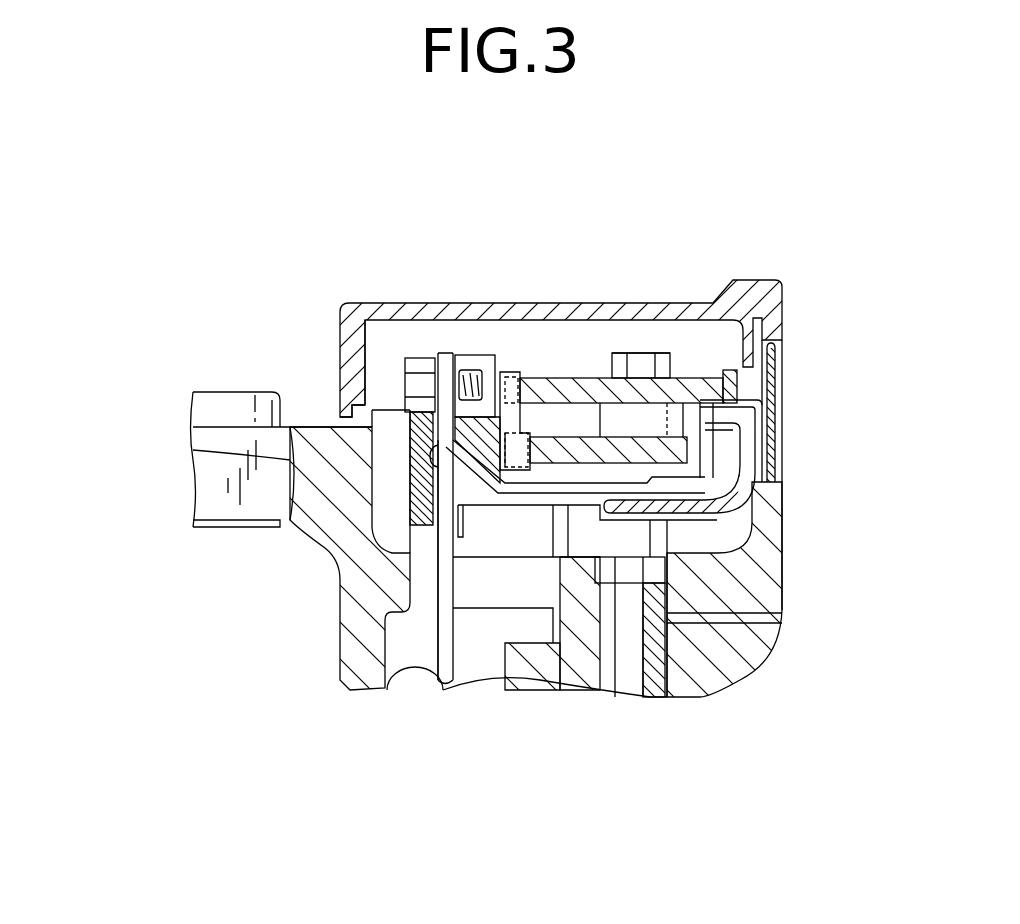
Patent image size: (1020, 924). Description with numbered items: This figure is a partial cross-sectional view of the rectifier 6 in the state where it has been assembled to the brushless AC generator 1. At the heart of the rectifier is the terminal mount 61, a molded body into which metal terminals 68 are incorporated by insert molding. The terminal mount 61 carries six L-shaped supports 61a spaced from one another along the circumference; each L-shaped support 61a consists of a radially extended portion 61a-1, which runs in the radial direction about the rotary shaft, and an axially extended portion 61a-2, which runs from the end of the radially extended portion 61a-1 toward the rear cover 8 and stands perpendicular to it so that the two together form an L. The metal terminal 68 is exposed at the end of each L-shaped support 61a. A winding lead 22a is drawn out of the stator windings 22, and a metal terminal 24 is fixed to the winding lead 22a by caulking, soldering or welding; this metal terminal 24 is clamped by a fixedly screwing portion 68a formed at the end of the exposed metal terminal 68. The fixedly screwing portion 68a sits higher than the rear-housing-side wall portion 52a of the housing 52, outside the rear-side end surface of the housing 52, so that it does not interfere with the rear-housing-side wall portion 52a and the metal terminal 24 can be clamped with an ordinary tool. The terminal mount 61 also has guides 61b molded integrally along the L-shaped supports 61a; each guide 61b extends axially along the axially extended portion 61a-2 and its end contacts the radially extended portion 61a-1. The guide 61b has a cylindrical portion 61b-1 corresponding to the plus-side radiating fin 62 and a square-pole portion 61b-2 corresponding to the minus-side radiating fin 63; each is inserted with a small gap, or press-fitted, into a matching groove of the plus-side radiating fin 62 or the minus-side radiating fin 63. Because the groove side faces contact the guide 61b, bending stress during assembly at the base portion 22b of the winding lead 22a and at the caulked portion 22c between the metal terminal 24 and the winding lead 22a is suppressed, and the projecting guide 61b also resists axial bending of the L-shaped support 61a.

The brushless AC generator 1 is at (801, 245).
The rectifier 6 is at (398, 343).
The rear cover 8 is at (425, 316).
The metal terminal 24 is at (352, 407).
The housing 52 is at (310, 530).
The rear-housing-side wall portion 52a is at (383, 450).
The stator windings 22 is at (427, 688).
The winding lead 22a is at (452, 686).
The base portion of the winding lead 22b is at (417, 678).
The caulked portion 22c is at (395, 526).
The terminal mount 61 is at (438, 530).
The L-shaped support 61a is at (483, 500).
The radially extended portion 61a-1 is at (553, 500).
The axially extended portion 61a-2 is at (420, 497).
The guide 61b is at (520, 372).
The portion corresponding to the plus-side radiating fin 61b-1 is at (640, 365).
The portion corresponding to the minus-side radiating fin 61b-2 is at (535, 440).
The metal terminal 68 is at (590, 395).
The fixedly screwing portion 68a is at (457, 360).
The plus-side radiating fin 62 is at (770, 452).
The minus-side radiating fin 63 is at (770, 398).